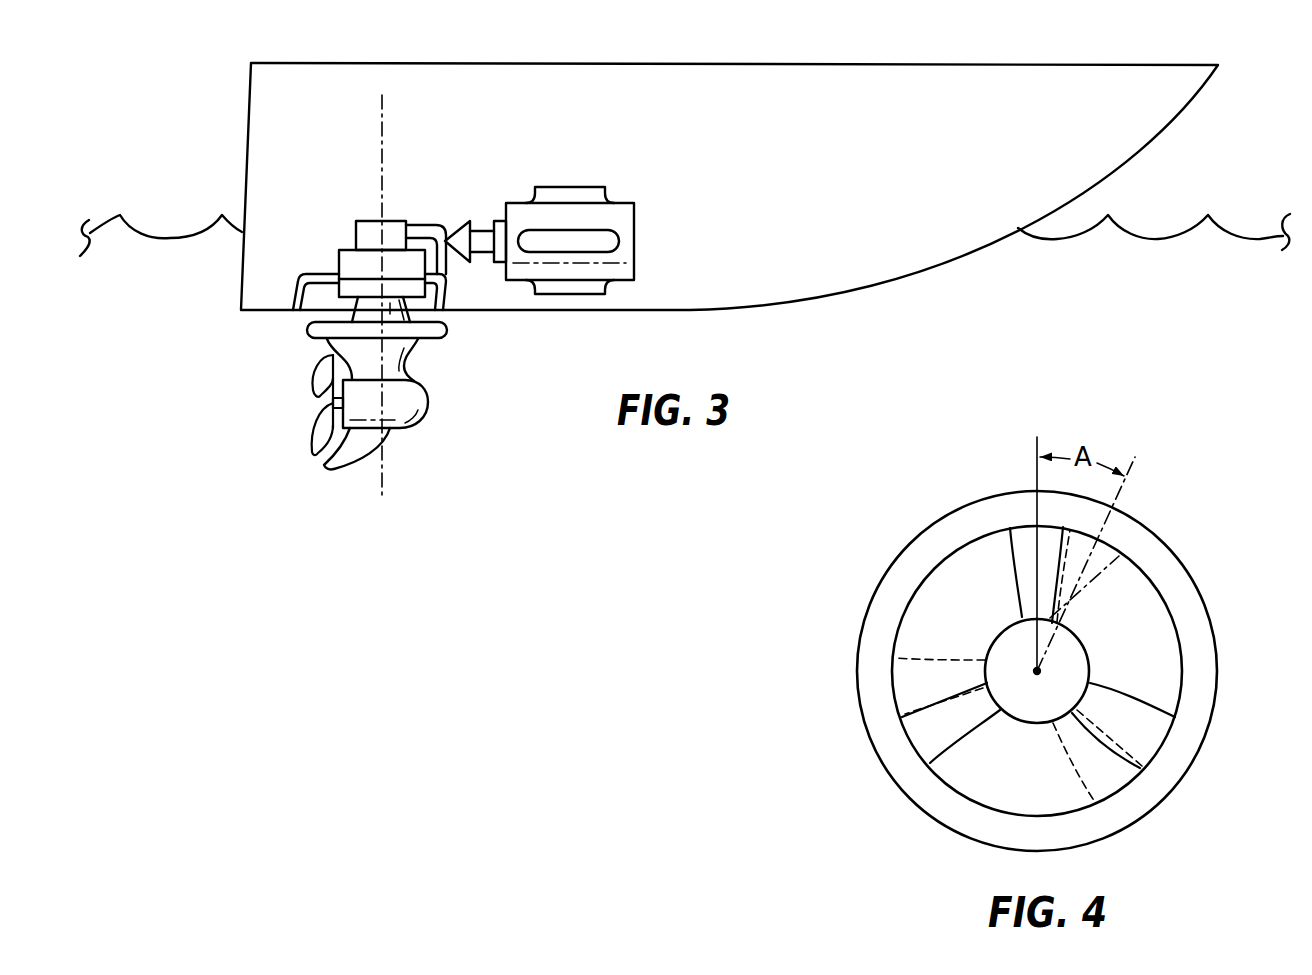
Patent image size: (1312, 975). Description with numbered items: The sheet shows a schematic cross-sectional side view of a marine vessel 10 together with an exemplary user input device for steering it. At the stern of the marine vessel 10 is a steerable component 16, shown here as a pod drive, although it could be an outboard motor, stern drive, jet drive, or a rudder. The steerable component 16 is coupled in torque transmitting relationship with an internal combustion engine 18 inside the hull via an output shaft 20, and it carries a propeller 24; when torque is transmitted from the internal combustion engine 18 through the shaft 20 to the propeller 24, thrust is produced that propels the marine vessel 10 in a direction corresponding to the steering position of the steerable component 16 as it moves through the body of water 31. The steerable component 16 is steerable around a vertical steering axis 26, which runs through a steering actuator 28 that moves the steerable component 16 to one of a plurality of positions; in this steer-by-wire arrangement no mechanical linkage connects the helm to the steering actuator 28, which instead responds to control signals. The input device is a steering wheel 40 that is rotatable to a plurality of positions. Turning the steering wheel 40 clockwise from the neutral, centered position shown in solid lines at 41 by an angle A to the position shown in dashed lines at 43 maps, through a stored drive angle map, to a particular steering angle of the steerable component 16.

In FIG. 3, the marine vessel 10 is at (585, 62).
In FIG. 3, the steerable component 16 is at (447, 352).
In FIG. 3, the internal combustion engine 18 is at (619, 203).
In FIG. 3, the output shaft 20 is at (485, 230).
In FIG. 3, the propeller 24 is at (306, 412).
In FIG. 3, the vertical steering axis 26 is at (388, 169).
In FIG. 3, the steering actuator 28 is at (331, 248).
In FIG. 3, the body of water 31 is at (1180, 230).
In FIG. 4, the steering wheel 40 is at (1206, 561).
In FIG. 4, the neutral centered position 41 is at (1013, 562).
In FIG. 4, the turned position 43 is at (1102, 578).